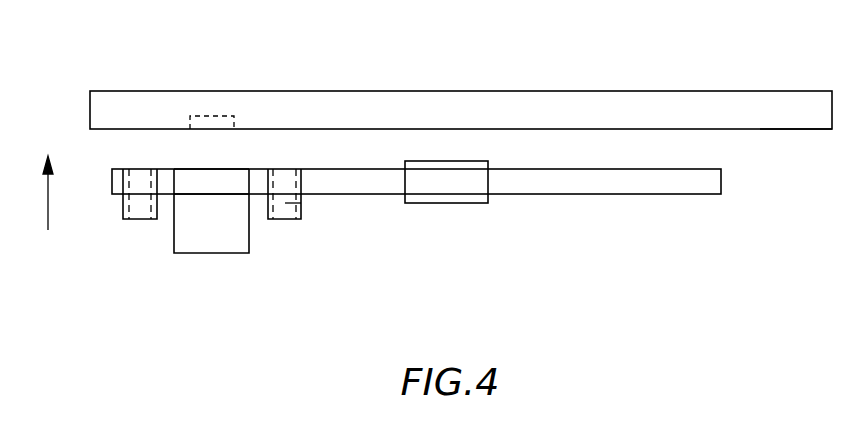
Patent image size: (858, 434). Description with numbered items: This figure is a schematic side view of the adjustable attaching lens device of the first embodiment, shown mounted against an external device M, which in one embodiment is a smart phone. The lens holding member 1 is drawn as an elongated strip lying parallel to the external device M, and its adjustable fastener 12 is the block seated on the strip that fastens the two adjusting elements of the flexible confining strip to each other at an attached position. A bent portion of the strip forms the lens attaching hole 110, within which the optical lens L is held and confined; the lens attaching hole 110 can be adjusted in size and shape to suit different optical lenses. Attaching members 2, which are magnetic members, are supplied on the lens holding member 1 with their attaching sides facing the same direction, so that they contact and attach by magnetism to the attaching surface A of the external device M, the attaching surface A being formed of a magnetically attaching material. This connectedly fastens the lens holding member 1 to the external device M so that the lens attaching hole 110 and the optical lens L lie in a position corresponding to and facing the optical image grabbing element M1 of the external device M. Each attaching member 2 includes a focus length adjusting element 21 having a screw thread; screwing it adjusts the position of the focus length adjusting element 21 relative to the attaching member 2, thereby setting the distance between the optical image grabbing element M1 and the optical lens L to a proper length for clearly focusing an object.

The external device M is at (371, 98).
The optical image grabbing element M1 is at (207, 122).
The attaching surface A is at (782, 130).
The lens holding member 1 is at (645, 192).
The adjustable fastener 12 is at (445, 193).
The lens attaching hole 110 is at (210, 178).
The optical lens L is at (213, 245).
The attaching member 2 is at (285, 210).
The focus length adjusting element 21 is at (303, 203).